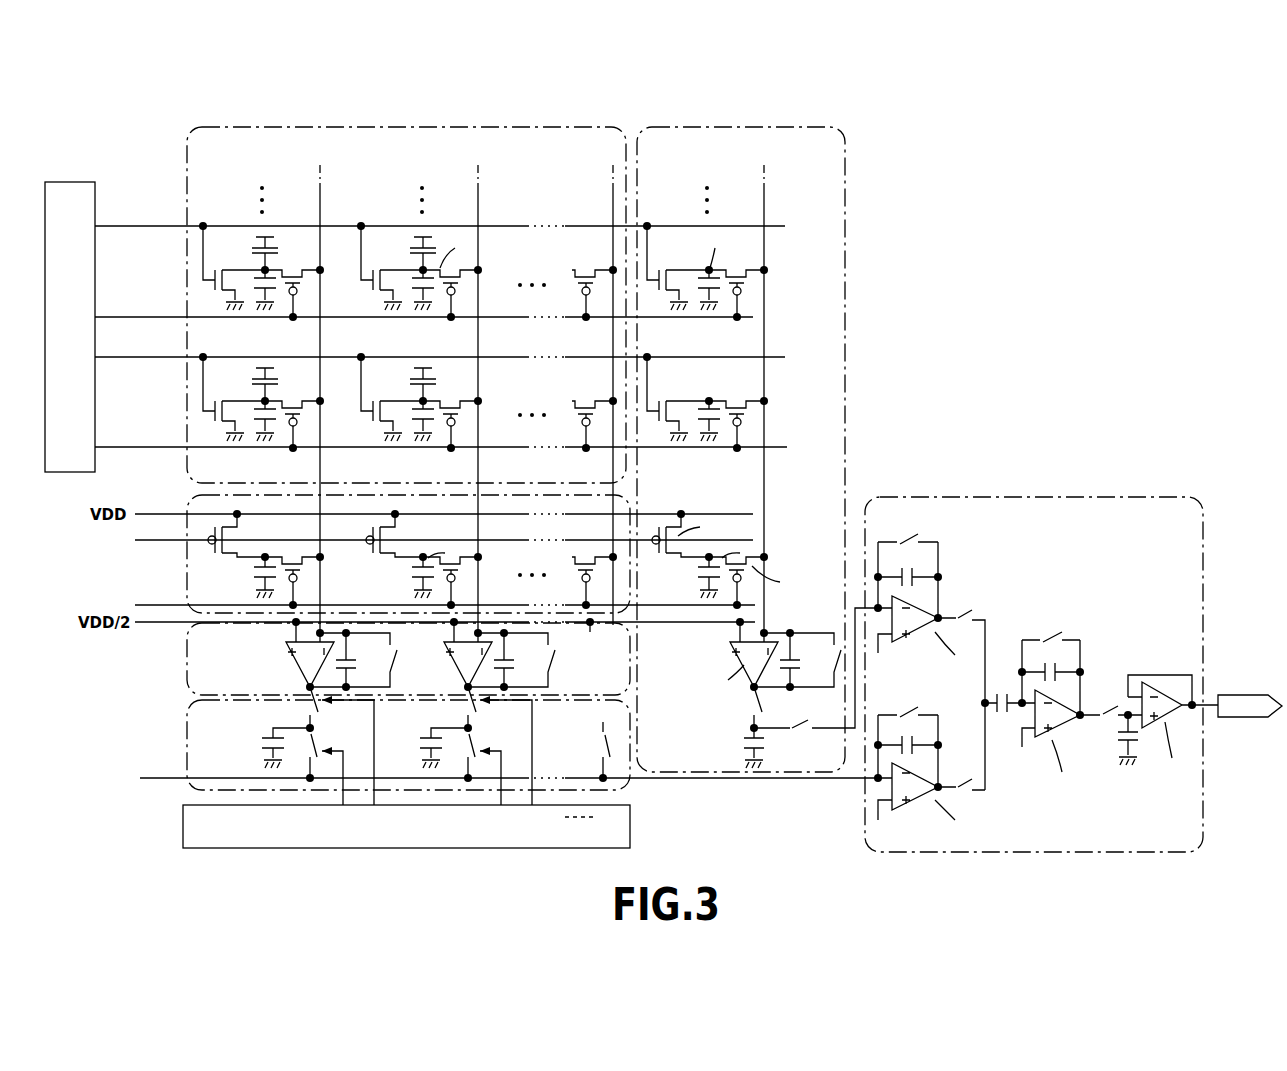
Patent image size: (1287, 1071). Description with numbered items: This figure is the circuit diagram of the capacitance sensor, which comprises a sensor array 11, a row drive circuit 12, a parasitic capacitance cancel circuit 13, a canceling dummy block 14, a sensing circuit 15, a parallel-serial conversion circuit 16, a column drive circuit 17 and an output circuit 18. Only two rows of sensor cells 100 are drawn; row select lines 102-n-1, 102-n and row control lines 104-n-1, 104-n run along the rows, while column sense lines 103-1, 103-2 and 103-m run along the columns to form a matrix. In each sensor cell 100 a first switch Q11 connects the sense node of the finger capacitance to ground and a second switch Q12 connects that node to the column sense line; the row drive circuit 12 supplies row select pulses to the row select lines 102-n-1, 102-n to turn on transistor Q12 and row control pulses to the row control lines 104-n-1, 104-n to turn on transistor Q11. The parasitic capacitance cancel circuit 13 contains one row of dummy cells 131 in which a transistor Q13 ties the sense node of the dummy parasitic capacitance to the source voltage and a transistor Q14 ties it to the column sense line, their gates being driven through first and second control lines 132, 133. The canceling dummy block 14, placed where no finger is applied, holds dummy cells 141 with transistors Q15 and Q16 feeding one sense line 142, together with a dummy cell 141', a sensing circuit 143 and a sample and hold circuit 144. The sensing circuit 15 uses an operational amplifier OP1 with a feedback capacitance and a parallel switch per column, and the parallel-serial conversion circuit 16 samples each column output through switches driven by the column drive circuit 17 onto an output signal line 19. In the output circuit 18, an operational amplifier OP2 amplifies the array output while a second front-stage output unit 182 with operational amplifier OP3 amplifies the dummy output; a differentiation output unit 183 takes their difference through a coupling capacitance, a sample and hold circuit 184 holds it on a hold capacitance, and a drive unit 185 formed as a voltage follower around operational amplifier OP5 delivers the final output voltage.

The sensor array 11 is at (187, 178).
The row drive circuit 12 is at (75, 182).
The parasitic capacitance cancel circuit 13 is at (187, 503).
The canceling dummy block 14 is at (845, 438).
The sensing circuit 15 is at (187, 660).
The parallel-serial conversion circuit 16 is at (187, 736).
The column drive circuit 17 is at (630, 830).
The output circuit 18 is at (1000, 497).
The output signal line 19 is at (742, 780).
The sensor cell 100 is at (425, 232).
The row select line 102-n-1 is at (330, 318).
The row select line 102-n is at (330, 448).
The column sense line 103-1 is at (320, 466).
The column sense line 103-2 is at (482, 464).
The column sense line 103-m is at (613, 201).
The row control line 104-n-1 is at (135, 230).
The row control line 104-n is at (135, 362).
The dummy cell 131 is at (425, 559).
The first control line 132 is at (155, 548).
The second control line 133 is at (217, 605).
The dummy cell 141 is at (727, 261).
The dummy cell 141' is at (734, 557).
The sense line 142 is at (766, 344).
The sensing circuit 143 is at (712, 665).
The sample & hold circuit 144 is at (712, 722).
The second front-stage output unit 182 is at (945, 593).
The differentiation output unit 183 is at (1035, 605).
The sample & hold circuit 184 is at (1061, 721).
The drive unit 185 is at (1205, 692).
The first switch Q11 is at (425, 271).
The second switch Q12 is at (458, 270).
The first switch Q13 is at (445, 559).
The second switch Q14 is at (462, 566).
The first switch Q15 is at (726, 271).
The second switch Q16 is at (740, 270).
The operational amplifier OP1 is at (458, 662).
The operational amplifier OP2 is at (1110, 775).
The operational amplifier OP3 is at (950, 540).
The operational amplifier OP5 is at (1157, 660).